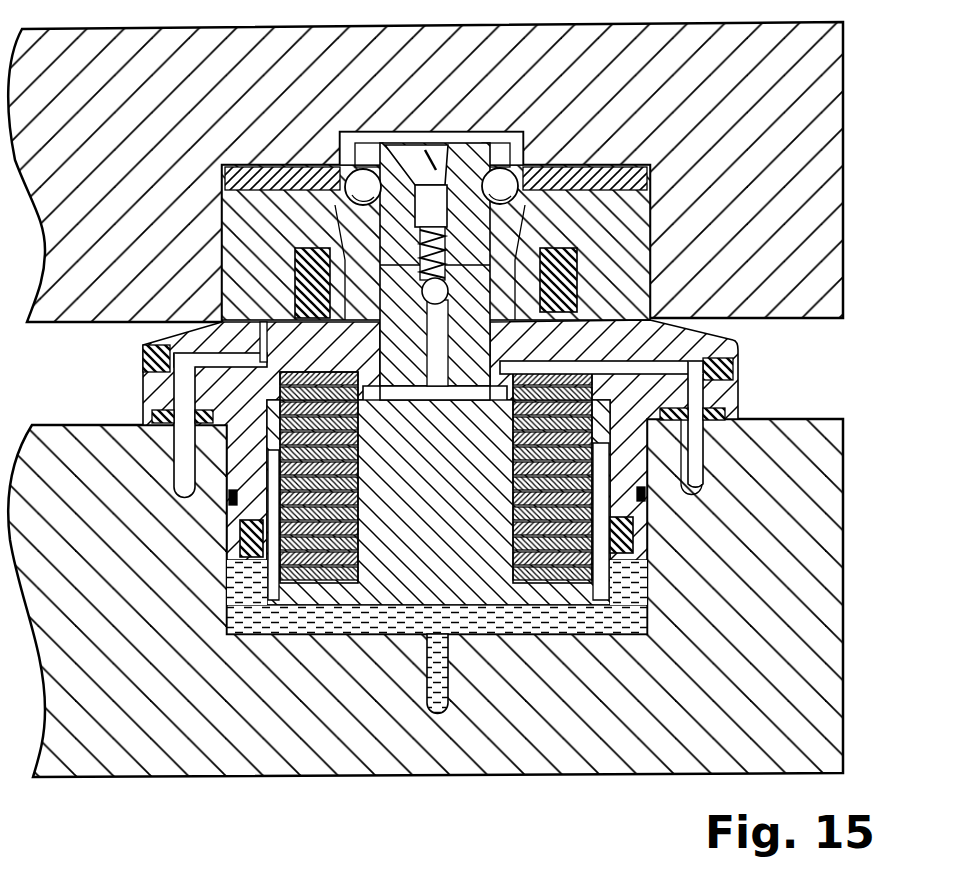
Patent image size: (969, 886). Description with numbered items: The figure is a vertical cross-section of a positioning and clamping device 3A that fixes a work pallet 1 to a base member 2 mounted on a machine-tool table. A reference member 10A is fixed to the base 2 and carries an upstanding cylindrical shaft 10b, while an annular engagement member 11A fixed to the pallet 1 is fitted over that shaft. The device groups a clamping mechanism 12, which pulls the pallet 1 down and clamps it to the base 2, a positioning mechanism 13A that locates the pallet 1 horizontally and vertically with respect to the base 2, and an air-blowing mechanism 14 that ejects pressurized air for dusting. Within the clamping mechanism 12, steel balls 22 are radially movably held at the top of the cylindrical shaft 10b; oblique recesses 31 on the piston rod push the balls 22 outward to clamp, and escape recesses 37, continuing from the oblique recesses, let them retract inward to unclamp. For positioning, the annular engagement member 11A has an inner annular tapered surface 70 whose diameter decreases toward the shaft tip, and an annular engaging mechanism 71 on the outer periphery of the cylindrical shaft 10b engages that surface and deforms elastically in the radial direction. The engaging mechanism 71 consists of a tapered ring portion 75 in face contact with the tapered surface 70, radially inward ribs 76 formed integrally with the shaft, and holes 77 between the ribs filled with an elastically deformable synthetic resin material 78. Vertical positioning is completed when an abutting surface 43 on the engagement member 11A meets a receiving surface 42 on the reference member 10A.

The work pallet 1 is at (843, 76).
The base member 2 is at (840, 470).
The positioning and clamping device 3A is at (685, 150).
The reference member 10A is at (700, 323).
The cylindrical shaft 10b is at (345, 232).
The annular engagement member 11A is at (218, 200).
The positioning mechanism 13A is at (578, 212).
The clamping mechanism 12 is at (610, 647).
The air-blowing mechanism 14 is at (714, 500).
The steel balls 22 is at (504, 168).
The oblique recesses 31 is at (370, 170).
The escape recesses 37 is at (438, 158).
The receiving surface 42 is at (610, 310).
The abutting surface 43 is at (608, 300).
The annular tapered surface 70 is at (300, 305).
The annular engaging mechanism 71 is at (285, 236).
The tapered ring portion 75 is at (209, 410).
The ribs 76 is at (315, 248).
The holes 77 is at (382, 298).
The synthetic resin material 78 is at (352, 378).